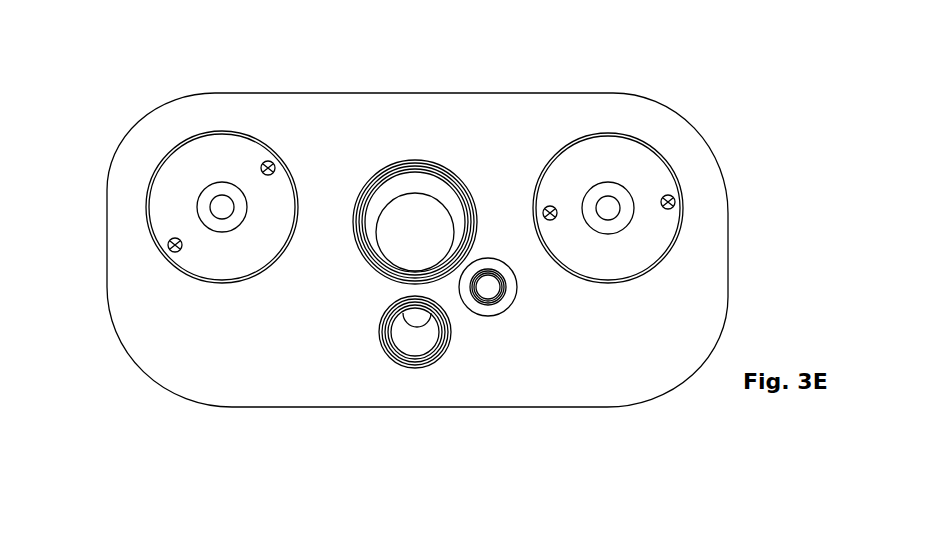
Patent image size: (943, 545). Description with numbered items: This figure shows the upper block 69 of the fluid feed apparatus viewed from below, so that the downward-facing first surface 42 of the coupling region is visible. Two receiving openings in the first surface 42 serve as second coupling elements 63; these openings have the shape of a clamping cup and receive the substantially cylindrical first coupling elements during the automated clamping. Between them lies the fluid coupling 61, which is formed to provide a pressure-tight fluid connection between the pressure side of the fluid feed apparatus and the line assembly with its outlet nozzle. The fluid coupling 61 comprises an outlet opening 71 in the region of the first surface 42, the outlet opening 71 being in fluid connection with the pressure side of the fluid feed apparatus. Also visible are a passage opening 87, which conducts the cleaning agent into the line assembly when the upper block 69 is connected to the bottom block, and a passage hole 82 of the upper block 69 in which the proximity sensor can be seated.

The upper block 69 is at (84, 66).
The first surface 42 is at (525, 125).
The second coupling elements 63 is at (220, 165).
The fluid coupling 61 is at (415, 162).
The outlet opening 71 is at (375, 213).
The passage opening 87 is at (403, 333).
The passage hole 82 is at (472, 299).